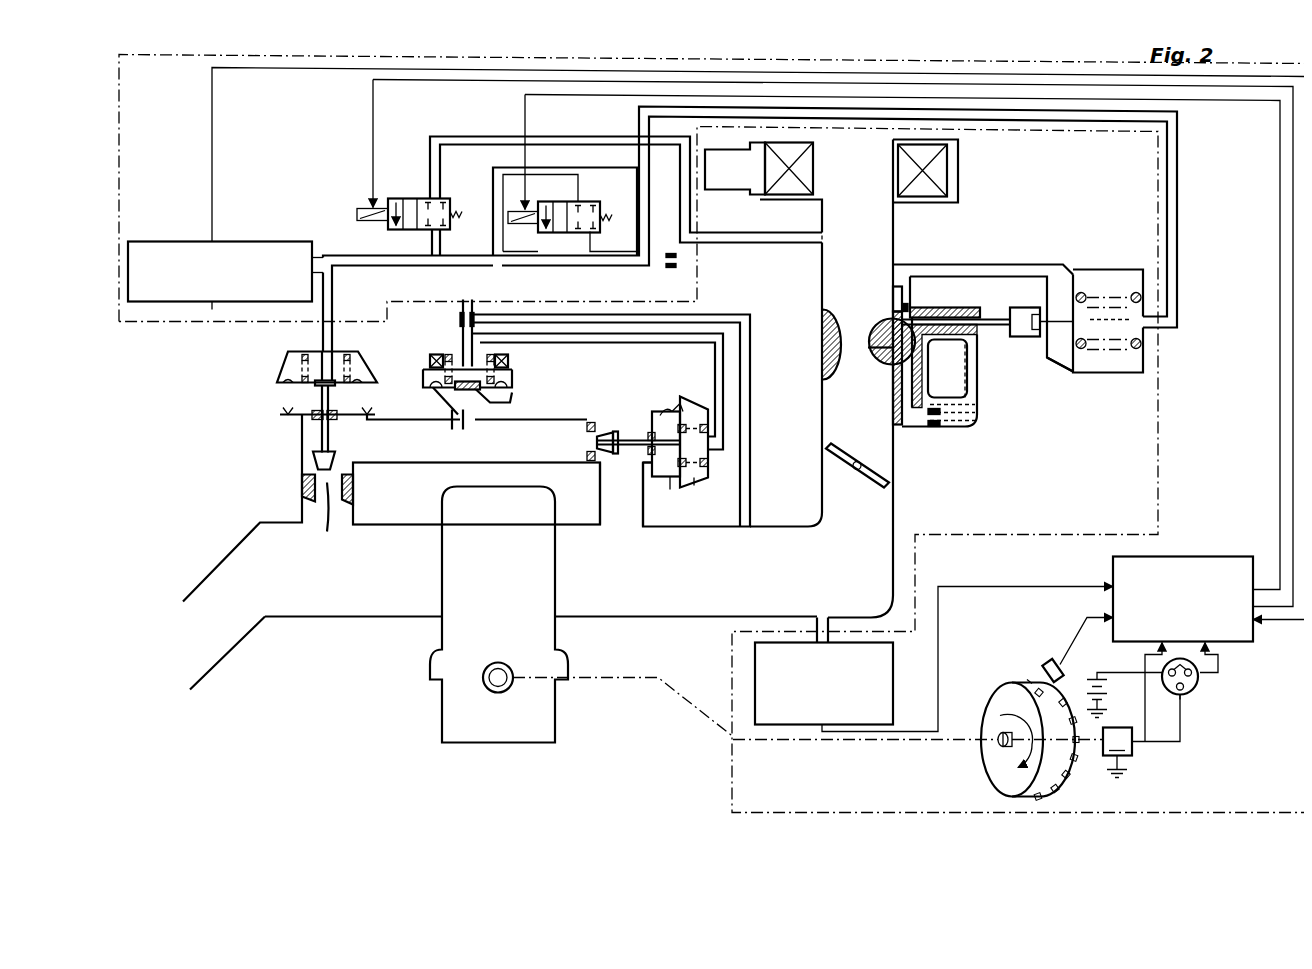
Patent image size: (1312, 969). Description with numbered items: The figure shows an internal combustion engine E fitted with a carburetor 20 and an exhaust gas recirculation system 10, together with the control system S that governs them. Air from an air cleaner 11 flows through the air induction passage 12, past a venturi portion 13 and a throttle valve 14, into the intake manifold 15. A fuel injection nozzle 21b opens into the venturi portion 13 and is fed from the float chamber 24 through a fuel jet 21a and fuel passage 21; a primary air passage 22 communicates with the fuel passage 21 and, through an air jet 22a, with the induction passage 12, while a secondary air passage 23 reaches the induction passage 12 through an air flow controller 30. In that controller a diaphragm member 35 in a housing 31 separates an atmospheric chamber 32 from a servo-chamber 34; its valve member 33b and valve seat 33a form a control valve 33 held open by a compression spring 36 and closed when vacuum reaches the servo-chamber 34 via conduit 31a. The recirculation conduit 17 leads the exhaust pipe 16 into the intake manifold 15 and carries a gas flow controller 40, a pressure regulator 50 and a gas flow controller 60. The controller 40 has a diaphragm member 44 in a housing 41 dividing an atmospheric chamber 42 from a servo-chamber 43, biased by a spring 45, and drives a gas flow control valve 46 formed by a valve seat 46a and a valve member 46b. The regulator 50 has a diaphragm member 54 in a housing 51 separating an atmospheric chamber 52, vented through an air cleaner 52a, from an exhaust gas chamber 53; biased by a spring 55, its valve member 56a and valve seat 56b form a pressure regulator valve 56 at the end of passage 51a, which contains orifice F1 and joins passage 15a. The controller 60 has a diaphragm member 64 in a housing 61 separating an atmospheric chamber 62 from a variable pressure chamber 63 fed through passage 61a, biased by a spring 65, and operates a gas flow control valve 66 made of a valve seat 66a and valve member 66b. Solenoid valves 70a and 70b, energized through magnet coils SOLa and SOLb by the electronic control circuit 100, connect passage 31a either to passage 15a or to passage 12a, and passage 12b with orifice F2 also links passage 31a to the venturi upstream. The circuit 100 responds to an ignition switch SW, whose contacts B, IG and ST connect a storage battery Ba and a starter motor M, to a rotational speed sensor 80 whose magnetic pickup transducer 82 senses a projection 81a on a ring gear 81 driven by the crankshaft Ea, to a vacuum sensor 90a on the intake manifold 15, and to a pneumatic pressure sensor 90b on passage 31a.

The exhaust gas recirculation system 10 is at (250, 345).
The air cleaner 11 is at (795, 190).
The air induction passage 12 is at (822, 407).
The passage 12a is at (550, 138).
The passage 12b is at (737, 266).
The venturi portion 13 is at (825, 336).
The throttle valve 14 is at (873, 470).
The intake manifold 15 is at (687, 576).
The passage 15a is at (545, 168).
The exhaust pipe 16 is at (371, 578).
The exhaust gas recirculation conduit 17 is at (388, 449).
The carburetor 20 is at (993, 408).
The fuel passage 21 is at (902, 403).
The fuel jet 21a is at (935, 428).
The fuel injection nozzle 21b is at (875, 347).
The primary air passage 22 is at (880, 330).
The air jet 22a is at (892, 301).
The secondary air passage 23 is at (943, 262).
The float chamber 24 is at (980, 420).
The air flow controller 30 is at (1078, 245).
The housing 31 is at (1078, 378).
The conduit 31a is at (378, 262).
The atmospheric chamber 32 is at (1057, 357).
The control valve 33 is at (1018, 333).
The valve seat 33a is at (1035, 338).
The valve member 33b is at (1038, 308).
The servo-chamber 34 is at (1122, 367).
The diaphragm member 35 is at (1080, 285).
The compression spring 36 is at (1125, 303).
The gas flow controller 40 is at (366, 334).
The housing 41 is at (364, 414).
The atmospheric chamber 42 is at (290, 415).
The servo-chamber 43 is at (286, 378).
The diaphragm member 44 is at (283, 393).
The compression spring 45 is at (345, 352).
The gas flow control valve 46 is at (326, 500).
The valve seat 46a is at (305, 490).
The valve member 46b is at (312, 463).
The pressure regulator 50 is at (410, 312).
The housing 51 is at (425, 372).
The passage 51a is at (462, 330).
The atmospheric chamber 52 is at (513, 375).
The air cleaner 52a is at (425, 358).
The exhaust gas chamber 53 is at (458, 412).
The diaphragm member 54 is at (430, 388).
The compression spring 55 is at (453, 353).
The pressure regulator valve 56 is at (452, 388).
The valve member 56a is at (498, 404).
The valve seat 56b is at (510, 361).
The gas flow controller 60 is at (695, 398).
The housing 61 is at (677, 487).
The passage 61a is at (589, 340).
The atmospheric chamber 62 is at (645, 470).
The variable pressure chamber 63 is at (695, 483).
The diaphragm member 64 is at (663, 477).
The compression spring 65 is at (708, 462).
The gas flow control valve 66 is at (590, 443).
The valve seat 66a is at (588, 462).
The valve member 66b is at (659, 410).
The solenoid valve 70a is at (597, 201).
The solenoid valve 70b is at (416, 229).
The rotational speed sensor 80 is at (1005, 660).
The ring gear 81 is at (985, 752).
The projection 81a is at (1027, 683).
The magnetic pickup transducer 82 is at (1050, 668).
The vacuum sensor 90a is at (755, 650).
The pneumatic pressure sensor 90b is at (198, 242).
The electronic control circuit 100 is at (1166, 557).
The internal combustion engine E is at (501, 588).
The crankshaft Ea is at (500, 669).
The control system S is at (728, 756).
The orifice F1 is at (468, 314).
The orifice F2 is at (670, 270).
The magnet coil SOLa is at (517, 226).
The magnet coil SOLb is at (357, 215).
The ignition switch SW is at (1202, 690).
The contact B is at (1172, 693).
The storage battery Ba is at (1107, 685).
The contact IG is at (1200, 678).
The contact ST is at (1190, 697).
The starter motor M is at (1117, 753).